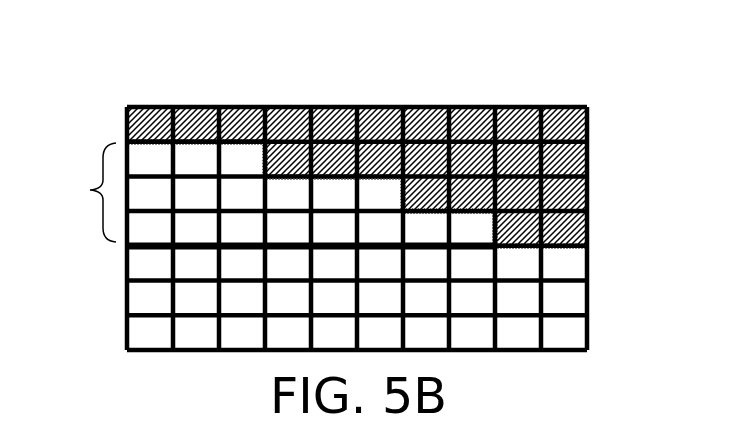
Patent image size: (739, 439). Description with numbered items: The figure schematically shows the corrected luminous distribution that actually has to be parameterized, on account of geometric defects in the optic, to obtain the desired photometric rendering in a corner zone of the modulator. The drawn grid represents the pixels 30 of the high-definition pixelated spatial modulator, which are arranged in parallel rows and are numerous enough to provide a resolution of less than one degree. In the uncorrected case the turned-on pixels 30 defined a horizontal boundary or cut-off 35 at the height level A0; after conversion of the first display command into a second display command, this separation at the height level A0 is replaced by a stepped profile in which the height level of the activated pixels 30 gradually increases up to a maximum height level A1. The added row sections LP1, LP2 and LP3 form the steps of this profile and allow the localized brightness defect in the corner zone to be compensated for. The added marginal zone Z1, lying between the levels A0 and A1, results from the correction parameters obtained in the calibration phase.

The horizontal boundary or cut-off 35 is at (196, 133).
The row section LP3 is at (268, 151).
The row section LP2 is at (406, 189).
The row section LP1 is at (498, 229).
The pixels 30 is at (573, 298).
The maximum height level A1 is at (127, 140).
The height level A0 is at (127, 246).
The marginal zone Z1 is at (82, 192).